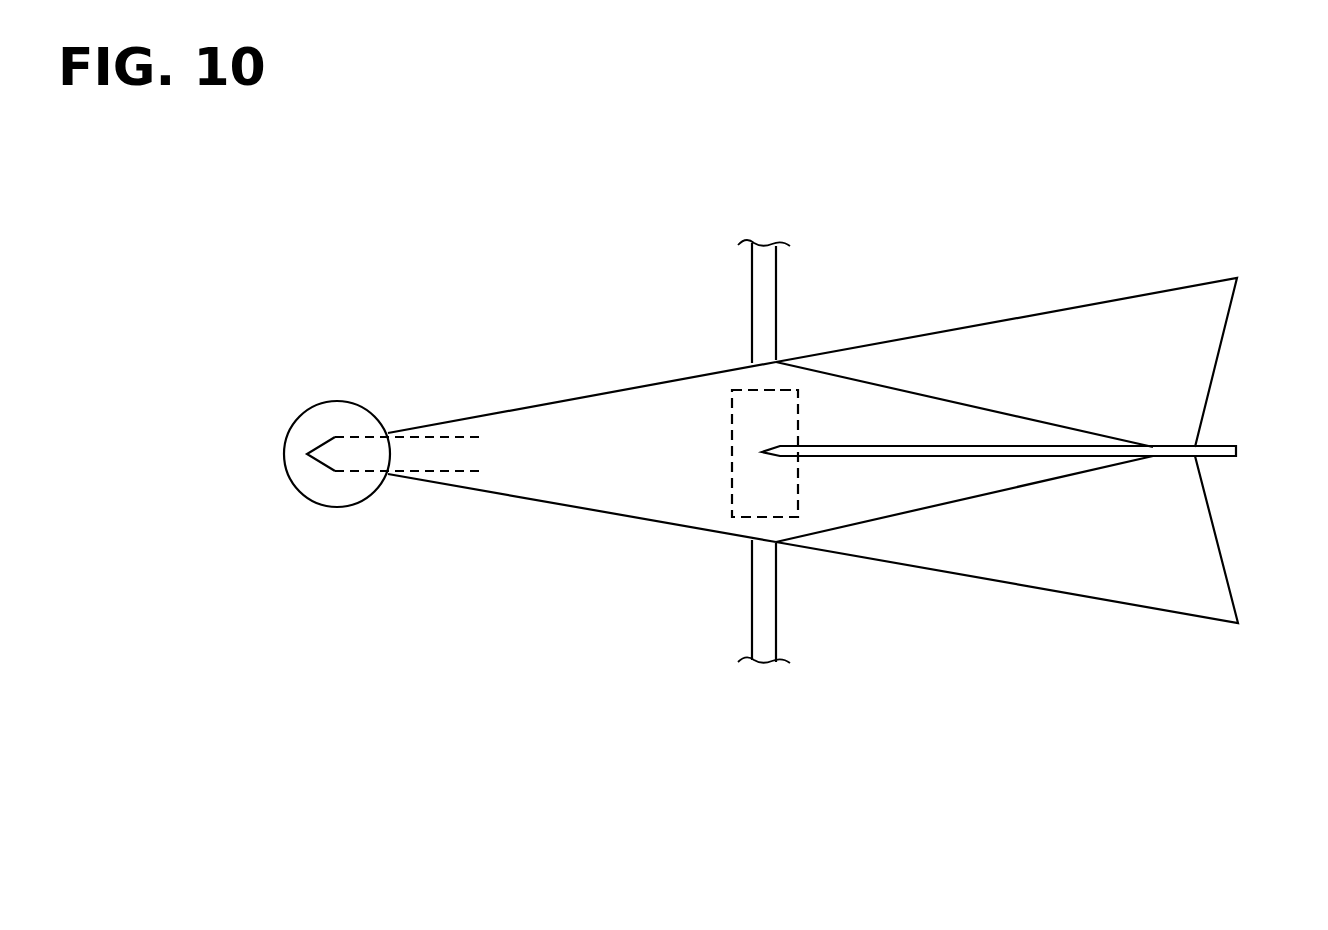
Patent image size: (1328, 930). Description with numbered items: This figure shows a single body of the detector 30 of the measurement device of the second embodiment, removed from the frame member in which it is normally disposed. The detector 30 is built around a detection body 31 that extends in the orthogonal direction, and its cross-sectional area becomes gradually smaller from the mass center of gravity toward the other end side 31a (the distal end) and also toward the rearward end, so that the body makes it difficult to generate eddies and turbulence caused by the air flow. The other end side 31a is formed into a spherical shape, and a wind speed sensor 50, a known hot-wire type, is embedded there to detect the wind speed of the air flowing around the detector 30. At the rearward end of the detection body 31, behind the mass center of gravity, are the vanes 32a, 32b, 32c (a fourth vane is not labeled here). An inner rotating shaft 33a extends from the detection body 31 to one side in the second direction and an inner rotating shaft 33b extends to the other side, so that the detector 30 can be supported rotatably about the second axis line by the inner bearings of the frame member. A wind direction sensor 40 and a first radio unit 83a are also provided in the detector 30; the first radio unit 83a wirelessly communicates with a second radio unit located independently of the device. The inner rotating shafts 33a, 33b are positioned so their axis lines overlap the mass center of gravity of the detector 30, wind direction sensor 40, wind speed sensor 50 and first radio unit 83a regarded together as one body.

The detector 30 is at (512, 503).
The detection body 31 is at (632, 503).
The other end side of the detection body 31a is at (285, 455).
The wind speed sensor 50 is at (320, 475).
The vane 32a is at (1158, 597).
The vane 32b is at (1210, 452).
The vane 32c is at (1153, 317).
The inner rotating shaft 33a is at (765, 308).
The inner rotating shaft 33b is at (763, 625).
The wind direction sensor 40 is at (780, 517).
The first radio unit 83a is at (782, 388).